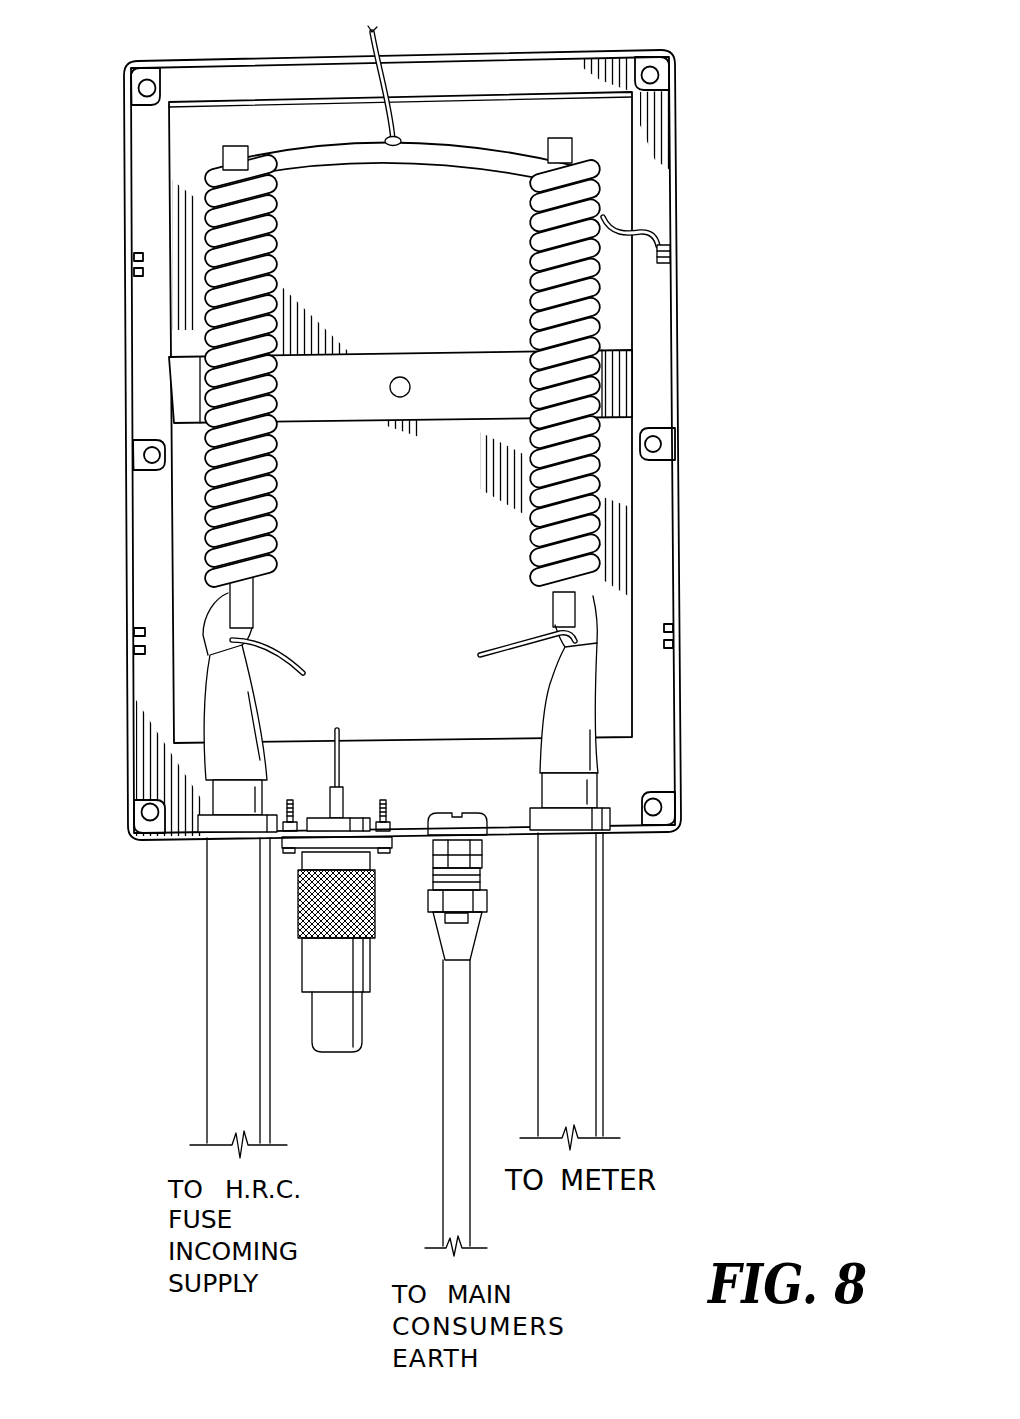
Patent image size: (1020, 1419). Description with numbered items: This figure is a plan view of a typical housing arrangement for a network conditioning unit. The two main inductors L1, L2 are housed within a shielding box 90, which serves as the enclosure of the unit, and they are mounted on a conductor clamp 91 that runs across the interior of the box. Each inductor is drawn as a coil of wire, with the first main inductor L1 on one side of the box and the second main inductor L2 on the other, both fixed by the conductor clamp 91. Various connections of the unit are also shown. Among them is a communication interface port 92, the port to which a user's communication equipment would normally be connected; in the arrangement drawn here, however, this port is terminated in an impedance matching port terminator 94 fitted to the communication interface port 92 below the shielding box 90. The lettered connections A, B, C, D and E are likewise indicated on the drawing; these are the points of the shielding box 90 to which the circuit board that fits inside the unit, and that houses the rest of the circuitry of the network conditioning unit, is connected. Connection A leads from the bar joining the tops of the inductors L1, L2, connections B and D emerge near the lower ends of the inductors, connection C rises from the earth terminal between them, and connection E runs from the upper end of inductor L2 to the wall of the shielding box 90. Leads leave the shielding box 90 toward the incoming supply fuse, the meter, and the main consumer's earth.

The shielding box 90 is at (677, 323).
The conductor clamp 91 is at (185, 398).
The communication interface port 92 is at (370, 855).
The impedance matching port terminator 94 is at (357, 968).
The connection A is at (383, 73).
The connection B is at (281, 663).
The connection C is at (336, 765).
The connection D is at (515, 655).
The connection E is at (636, 225).
The main inductor L1 is at (261, 387).
The main inductor L2 is at (540, 382).